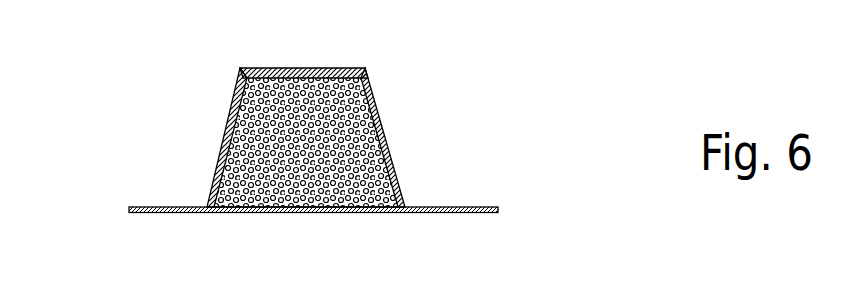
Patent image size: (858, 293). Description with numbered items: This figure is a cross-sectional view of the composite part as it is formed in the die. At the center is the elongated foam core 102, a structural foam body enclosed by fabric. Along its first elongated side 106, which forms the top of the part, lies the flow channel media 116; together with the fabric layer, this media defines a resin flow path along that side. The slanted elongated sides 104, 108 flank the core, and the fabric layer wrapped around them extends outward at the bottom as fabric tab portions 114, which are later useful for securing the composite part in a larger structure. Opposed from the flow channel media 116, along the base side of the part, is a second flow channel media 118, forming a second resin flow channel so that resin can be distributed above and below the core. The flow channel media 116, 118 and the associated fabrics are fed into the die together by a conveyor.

The elongated foam core 102 is at (306, 142).
The elongated side 104 is at (220, 142).
The first elongated side 106 is at (297, 68).
The elongated side 108 is at (398, 172).
The fabric tab portions 114 is at (129, 209).
The flow channel media 116 is at (239, 78).
The flow channel media 118 is at (295, 213).